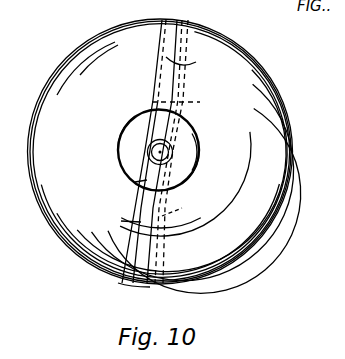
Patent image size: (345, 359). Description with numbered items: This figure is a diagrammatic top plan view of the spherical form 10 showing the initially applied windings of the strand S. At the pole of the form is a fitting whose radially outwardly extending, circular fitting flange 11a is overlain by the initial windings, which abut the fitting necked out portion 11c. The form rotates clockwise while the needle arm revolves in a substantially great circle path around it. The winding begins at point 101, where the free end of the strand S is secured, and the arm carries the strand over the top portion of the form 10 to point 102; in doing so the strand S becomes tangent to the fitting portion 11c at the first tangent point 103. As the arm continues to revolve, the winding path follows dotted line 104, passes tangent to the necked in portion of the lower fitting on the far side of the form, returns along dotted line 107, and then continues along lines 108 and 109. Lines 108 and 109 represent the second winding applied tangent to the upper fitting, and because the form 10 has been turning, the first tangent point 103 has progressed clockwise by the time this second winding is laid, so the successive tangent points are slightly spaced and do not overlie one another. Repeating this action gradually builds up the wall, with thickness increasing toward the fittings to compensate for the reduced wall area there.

The spherical form 10 is at (281, 143).
The starting point 101 is at (122, 281).
The end point of first pass 102 is at (199, 14).
The first tangent point 103 is at (148, 147).
The dotted line winding path 104 is at (188, 99).
The dotted line winding path 107 is at (183, 210).
The second winding line 108 is at (136, 219).
The second winding line 109 is at (194, 57).
The fitting flange 11a is at (128, 154).
The fitting necked out portion 11c is at (190, 167).
The strand S is at (155, 77).